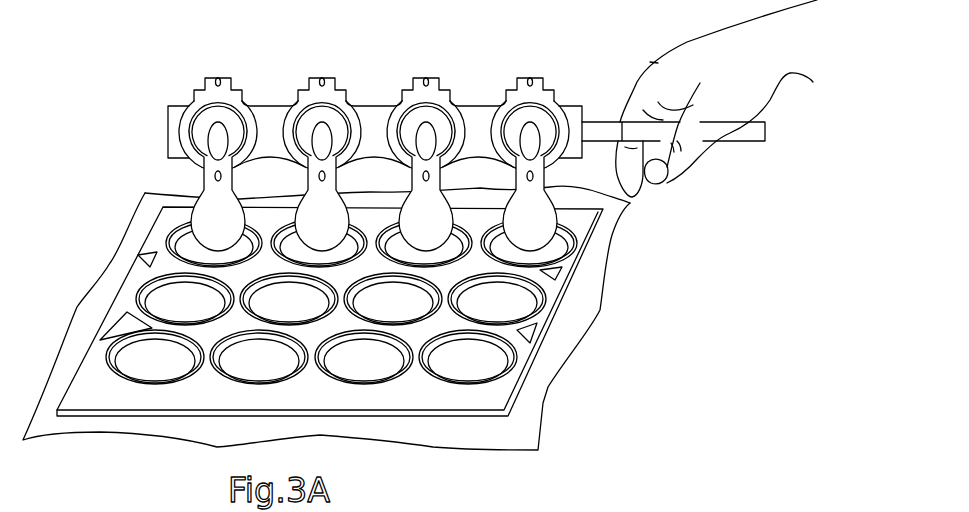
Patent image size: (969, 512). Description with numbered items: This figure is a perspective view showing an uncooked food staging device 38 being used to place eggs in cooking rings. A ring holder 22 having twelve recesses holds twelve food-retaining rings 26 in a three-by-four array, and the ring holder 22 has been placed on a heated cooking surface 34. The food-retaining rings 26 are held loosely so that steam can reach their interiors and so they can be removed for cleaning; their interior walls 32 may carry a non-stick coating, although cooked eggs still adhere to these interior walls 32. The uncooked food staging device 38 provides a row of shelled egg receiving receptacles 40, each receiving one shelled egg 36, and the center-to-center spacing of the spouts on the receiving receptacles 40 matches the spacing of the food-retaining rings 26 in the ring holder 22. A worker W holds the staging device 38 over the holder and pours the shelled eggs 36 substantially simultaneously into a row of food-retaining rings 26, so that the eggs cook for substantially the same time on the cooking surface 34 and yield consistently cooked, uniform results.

The ring holder 22 is at (82, 430).
The food-retaining rings 26 is at (170, 384).
The interior walls 32 is at (125, 353).
The cooking surface 34 is at (540, 368).
The shelled eggs 36 is at (213, 215).
The uncooked food staging device 38 is at (272, 80).
The shelled egg receiving receptacles 40 is at (187, 127).
The worker W is at (746, 75).